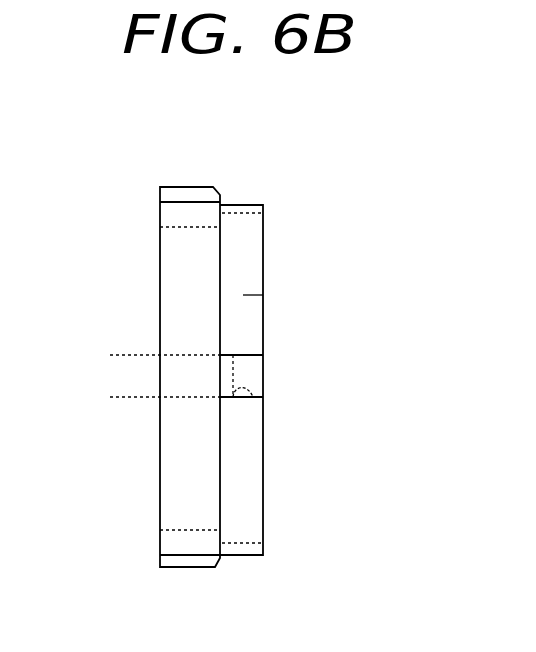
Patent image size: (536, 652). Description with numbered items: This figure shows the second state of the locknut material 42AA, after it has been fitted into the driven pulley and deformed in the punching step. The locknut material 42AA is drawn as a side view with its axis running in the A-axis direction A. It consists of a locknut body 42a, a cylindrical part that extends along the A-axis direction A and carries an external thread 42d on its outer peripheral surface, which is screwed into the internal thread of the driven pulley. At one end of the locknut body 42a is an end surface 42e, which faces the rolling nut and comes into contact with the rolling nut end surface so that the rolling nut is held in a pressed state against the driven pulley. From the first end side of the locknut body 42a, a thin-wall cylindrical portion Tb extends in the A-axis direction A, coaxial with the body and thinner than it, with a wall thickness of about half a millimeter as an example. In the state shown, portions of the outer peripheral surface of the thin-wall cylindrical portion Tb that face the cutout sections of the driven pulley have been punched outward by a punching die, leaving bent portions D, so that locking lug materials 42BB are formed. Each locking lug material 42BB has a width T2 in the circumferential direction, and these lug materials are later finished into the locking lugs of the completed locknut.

The locknut body 42a is at (180, 443).
The end surface 42e is at (160, 203).
The external thread 42d is at (193, 565).
The locknut material 42AA is at (275, 220).
The thin-wall cylindrical portion Tb is at (263, 295).
The locking lug material 42BB is at (250, 366).
The bent portion D is at (253, 400).
The width of locking lug material in the circumferential direction T2 is at (120, 355).
The A-axis direction A is at (193, 157).